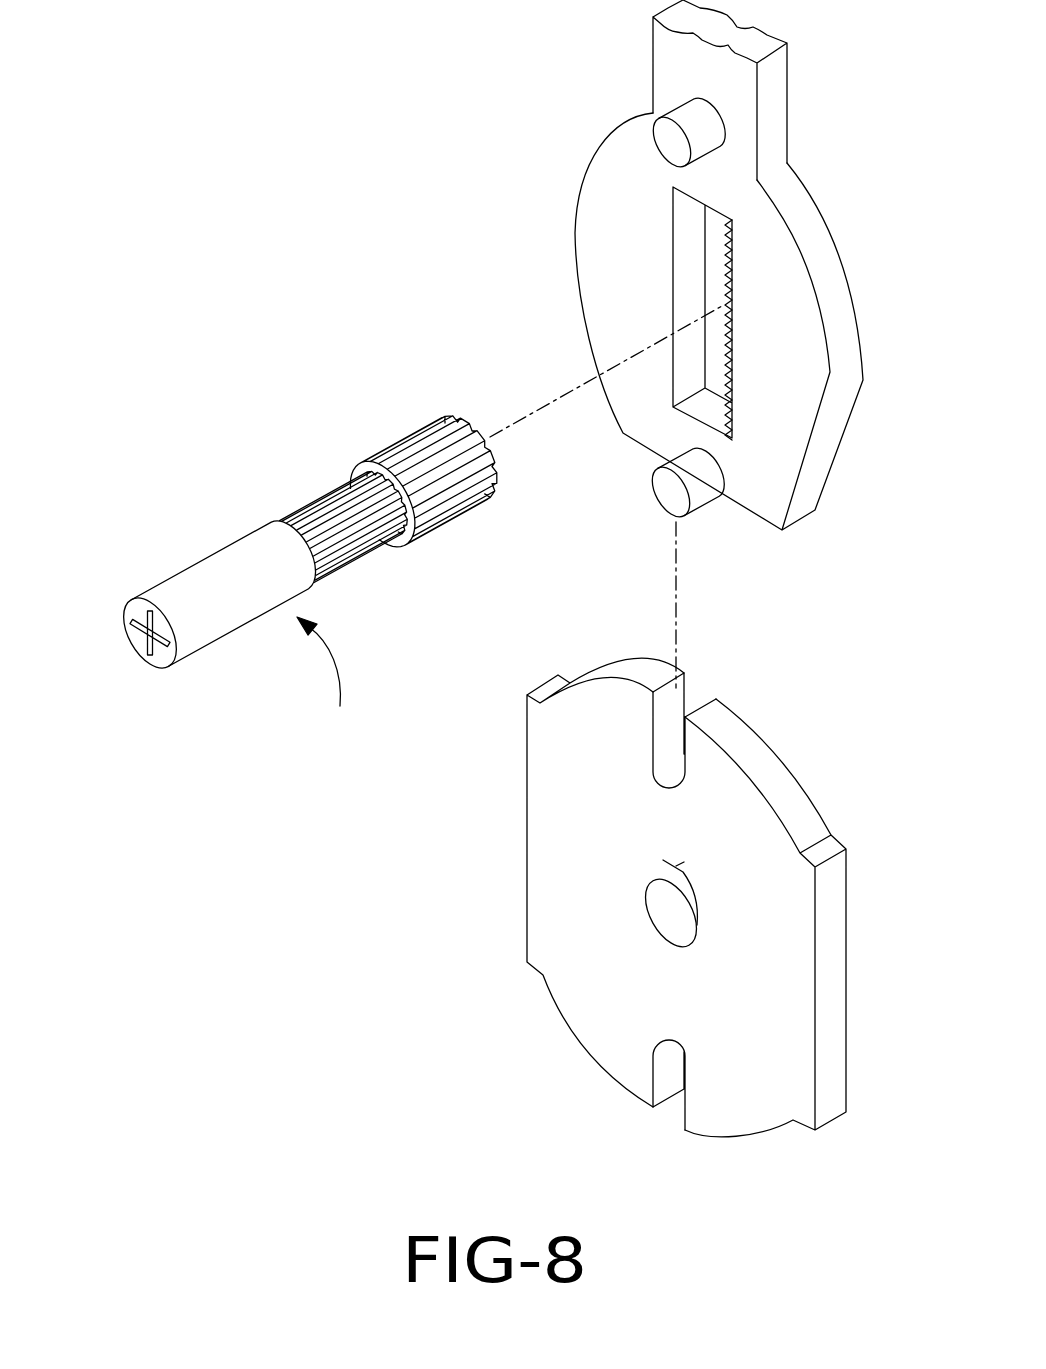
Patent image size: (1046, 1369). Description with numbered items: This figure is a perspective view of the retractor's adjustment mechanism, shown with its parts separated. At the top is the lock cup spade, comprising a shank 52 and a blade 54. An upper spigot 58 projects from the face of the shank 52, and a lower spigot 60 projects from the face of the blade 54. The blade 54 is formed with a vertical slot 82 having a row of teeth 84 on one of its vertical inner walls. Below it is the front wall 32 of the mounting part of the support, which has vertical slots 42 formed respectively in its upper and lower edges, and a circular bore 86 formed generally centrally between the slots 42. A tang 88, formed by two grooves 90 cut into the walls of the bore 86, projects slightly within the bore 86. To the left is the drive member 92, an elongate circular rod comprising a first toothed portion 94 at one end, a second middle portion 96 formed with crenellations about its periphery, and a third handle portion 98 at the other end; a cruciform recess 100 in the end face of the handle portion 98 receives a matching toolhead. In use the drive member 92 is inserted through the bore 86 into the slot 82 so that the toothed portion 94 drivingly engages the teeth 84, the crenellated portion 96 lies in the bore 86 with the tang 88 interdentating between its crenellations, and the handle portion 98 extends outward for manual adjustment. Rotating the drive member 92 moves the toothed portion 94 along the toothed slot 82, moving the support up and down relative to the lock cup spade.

The front wall 32 is at (723, 1113).
The vertical slots 42 is at (668, 710).
The shank 52 is at (767, 90).
The blade 54 is at (797, 360).
The upper spigot 58 is at (670, 140).
The lower spigot 60 is at (672, 492).
The vertical slot 82 is at (687, 255).
The teeth 84 is at (737, 250).
The circular bore 86 is at (690, 945).
The tang 88 is at (668, 888).
The grooves 90 is at (678, 870).
The drive member 92 is at (329, 678).
The first toothed portion 94 is at (395, 440).
The second middle portion 96 is at (287, 512).
The third handle portion 98 is at (208, 553).
The recess 100 is at (146, 640).